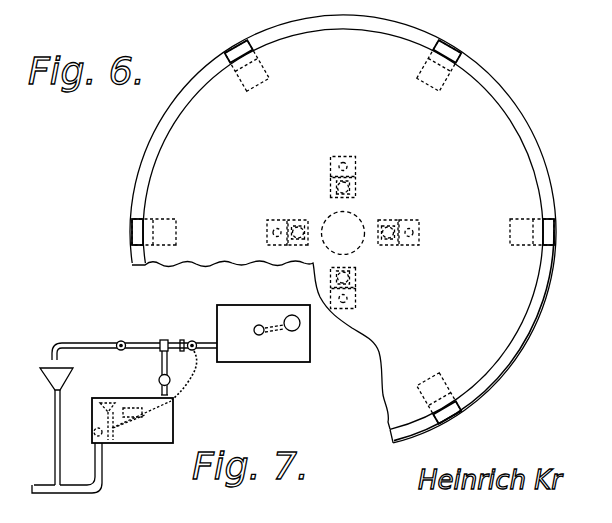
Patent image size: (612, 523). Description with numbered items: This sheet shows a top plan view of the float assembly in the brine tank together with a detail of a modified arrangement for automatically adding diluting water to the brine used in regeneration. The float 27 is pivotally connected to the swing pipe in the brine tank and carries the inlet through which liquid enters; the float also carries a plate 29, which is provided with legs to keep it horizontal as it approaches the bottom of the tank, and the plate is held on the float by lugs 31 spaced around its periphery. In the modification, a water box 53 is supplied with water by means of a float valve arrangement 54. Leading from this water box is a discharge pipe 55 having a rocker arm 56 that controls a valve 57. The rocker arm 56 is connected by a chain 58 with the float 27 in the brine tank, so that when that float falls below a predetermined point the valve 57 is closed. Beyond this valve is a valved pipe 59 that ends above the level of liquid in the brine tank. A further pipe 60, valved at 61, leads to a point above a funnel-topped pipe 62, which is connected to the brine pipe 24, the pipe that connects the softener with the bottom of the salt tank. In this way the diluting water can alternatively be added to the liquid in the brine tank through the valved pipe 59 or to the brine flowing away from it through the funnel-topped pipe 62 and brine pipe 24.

In FIG. 7, the pipe 24 is at (102, 451).
In FIG. 6, the float 27 is at (497, 118).
In FIG. 6, the plate 29 is at (542, 172).
In FIG. 6, the lugs 31 is at (136, 230).
In FIG. 7, the water box 53 is at (285, 362).
In FIG. 7, the float valve arrangement 54 is at (299, 328).
In FIG. 7, the discharge pipe 55 is at (176, 343).
In FIG. 7, the rocker arm 56 is at (196, 349).
In FIG. 7, the valve 57 is at (178, 370).
In FIG. 7, the chain 58 is at (186, 393).
In FIG. 7, the valved pipe 59 is at (161, 370).
In FIG. 7, the pipe 60 is at (92, 341).
In FIG. 7, the valve 61 is at (125, 343).
In FIG. 7, the funnel-topped pipe 62 is at (54, 428).